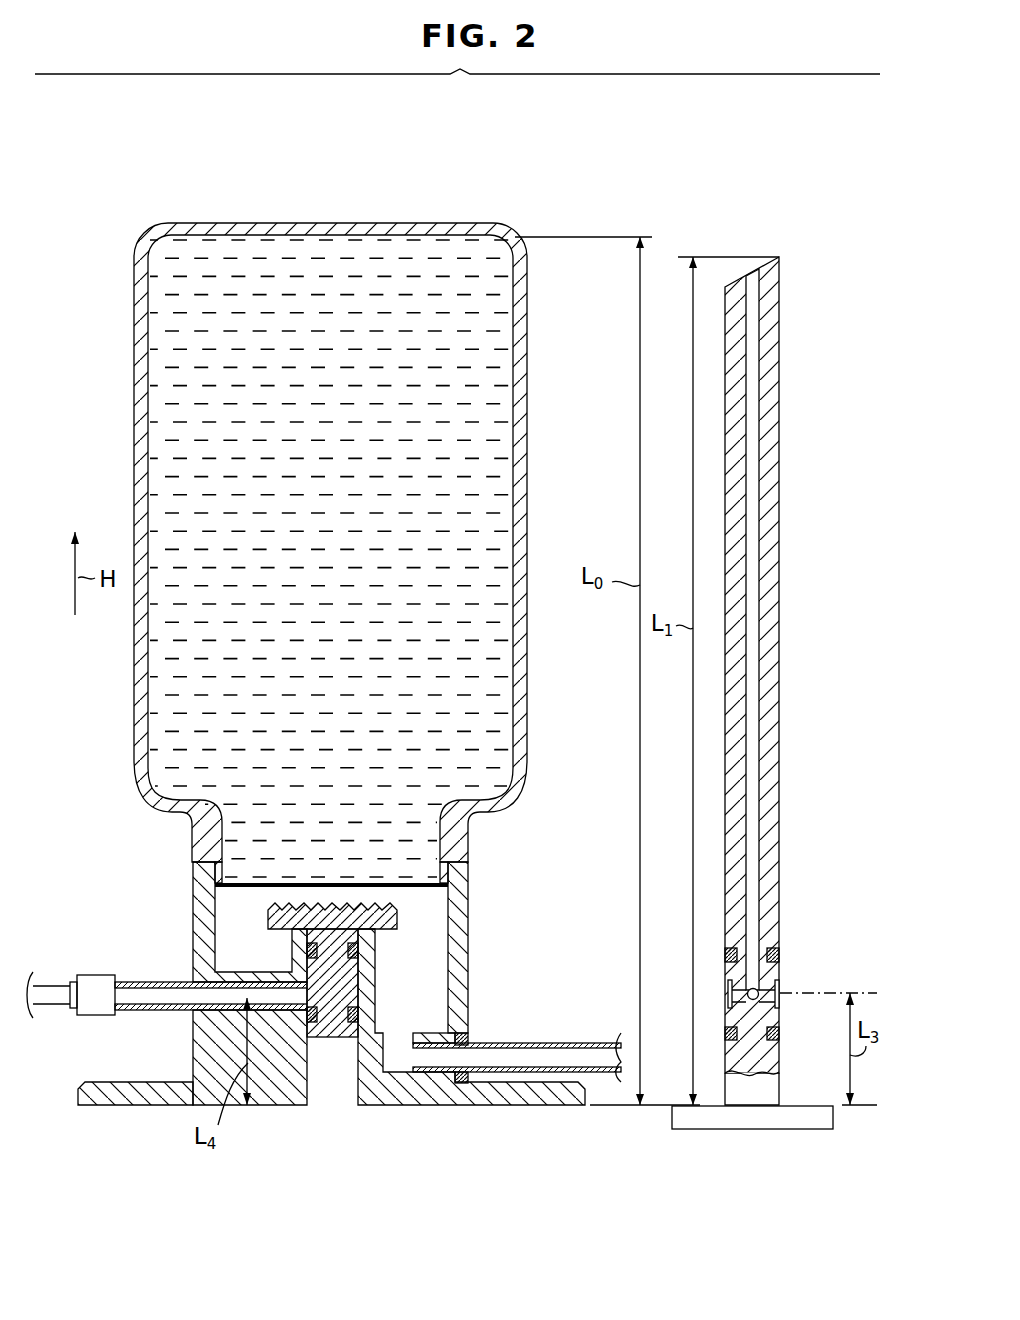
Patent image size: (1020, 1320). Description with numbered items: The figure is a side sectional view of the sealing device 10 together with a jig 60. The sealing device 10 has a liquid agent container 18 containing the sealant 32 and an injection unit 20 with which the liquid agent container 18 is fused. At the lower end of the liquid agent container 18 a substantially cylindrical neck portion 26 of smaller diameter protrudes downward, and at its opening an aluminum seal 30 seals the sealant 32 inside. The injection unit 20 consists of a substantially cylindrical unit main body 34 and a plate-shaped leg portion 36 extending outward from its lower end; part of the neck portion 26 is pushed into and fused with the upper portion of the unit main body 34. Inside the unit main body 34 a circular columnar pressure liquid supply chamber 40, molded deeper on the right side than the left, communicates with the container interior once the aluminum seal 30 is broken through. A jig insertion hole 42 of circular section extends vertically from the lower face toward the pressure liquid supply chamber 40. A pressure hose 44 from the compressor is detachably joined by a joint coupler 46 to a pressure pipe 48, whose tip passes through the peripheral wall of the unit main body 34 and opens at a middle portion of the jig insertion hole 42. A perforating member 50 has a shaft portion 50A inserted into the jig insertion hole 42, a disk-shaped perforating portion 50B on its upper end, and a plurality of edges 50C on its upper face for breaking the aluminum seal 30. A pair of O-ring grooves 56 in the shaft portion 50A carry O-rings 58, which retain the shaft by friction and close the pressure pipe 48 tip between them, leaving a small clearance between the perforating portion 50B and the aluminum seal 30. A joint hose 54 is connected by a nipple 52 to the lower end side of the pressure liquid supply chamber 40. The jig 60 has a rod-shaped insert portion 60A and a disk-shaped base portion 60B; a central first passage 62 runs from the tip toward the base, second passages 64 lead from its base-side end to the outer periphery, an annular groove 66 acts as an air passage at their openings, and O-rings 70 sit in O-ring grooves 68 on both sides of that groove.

The sealing device 10 is at (278, 172).
The liquid agent container 18 is at (468, 222).
The injection unit 20 is at (190, 897).
The neck portion 26 is at (468, 850).
The aluminum seal 30 is at (425, 893).
The sealant 32 is at (486, 412).
The unit main body 34 is at (468, 932).
The leg portion 36 is at (108, 1082).
The pressure liquid supply chamber 40 is at (446, 990).
The jig insertion hole 42 is at (323, 1045).
The pressure hose 44 is at (57, 982).
The joint coupler 46 is at (100, 975).
The pressure pipe 48 is at (155, 982).
The perforating member 50 is at (335, 1038).
The shaft portion 50A is at (362, 990).
The perforating portion 50B is at (288, 934).
The edges 50C is at (272, 902).
The nipple 52 is at (470, 1040).
The joint hose 54 is at (590, 1043).
The O-ring grooves 56 is at (345, 1025).
The O-rings 58 is at (360, 952).
The jig 60 is at (782, 280).
The insert portion 60A is at (780, 393).
The base portion 60B is at (672, 1115).
The first passage 62 is at (752, 302).
The second passages 64 is at (741, 1005).
The annular groove 66 is at (780, 985).
The O-ring grooves 68 is at (772, 948).
The O-rings 70 is at (780, 955).